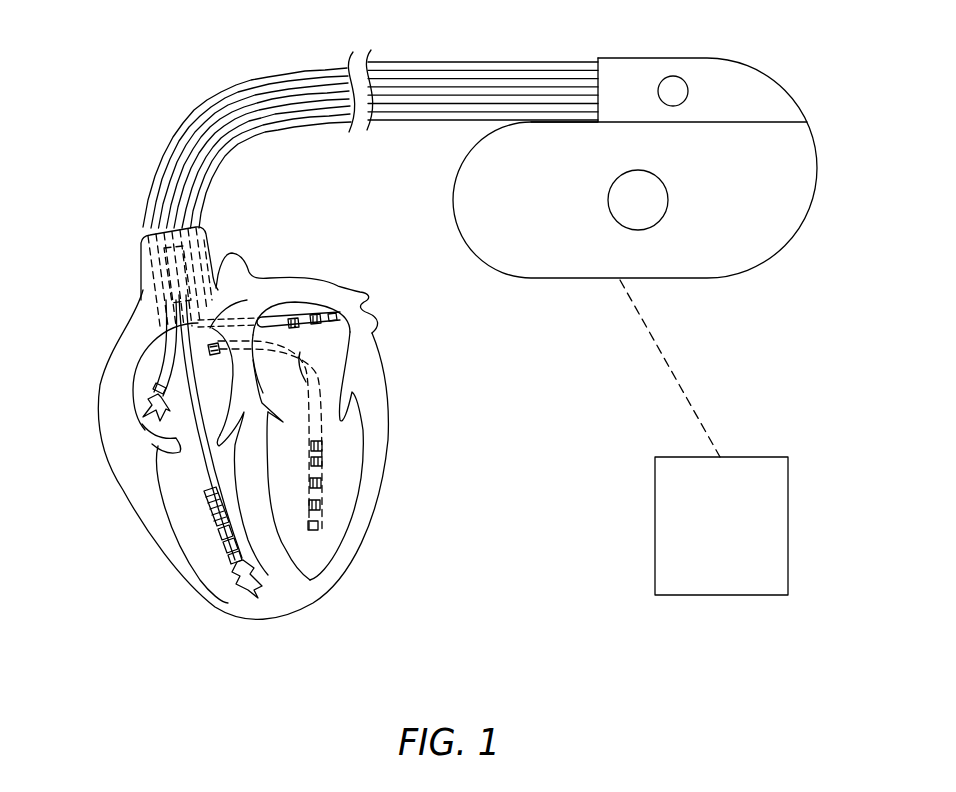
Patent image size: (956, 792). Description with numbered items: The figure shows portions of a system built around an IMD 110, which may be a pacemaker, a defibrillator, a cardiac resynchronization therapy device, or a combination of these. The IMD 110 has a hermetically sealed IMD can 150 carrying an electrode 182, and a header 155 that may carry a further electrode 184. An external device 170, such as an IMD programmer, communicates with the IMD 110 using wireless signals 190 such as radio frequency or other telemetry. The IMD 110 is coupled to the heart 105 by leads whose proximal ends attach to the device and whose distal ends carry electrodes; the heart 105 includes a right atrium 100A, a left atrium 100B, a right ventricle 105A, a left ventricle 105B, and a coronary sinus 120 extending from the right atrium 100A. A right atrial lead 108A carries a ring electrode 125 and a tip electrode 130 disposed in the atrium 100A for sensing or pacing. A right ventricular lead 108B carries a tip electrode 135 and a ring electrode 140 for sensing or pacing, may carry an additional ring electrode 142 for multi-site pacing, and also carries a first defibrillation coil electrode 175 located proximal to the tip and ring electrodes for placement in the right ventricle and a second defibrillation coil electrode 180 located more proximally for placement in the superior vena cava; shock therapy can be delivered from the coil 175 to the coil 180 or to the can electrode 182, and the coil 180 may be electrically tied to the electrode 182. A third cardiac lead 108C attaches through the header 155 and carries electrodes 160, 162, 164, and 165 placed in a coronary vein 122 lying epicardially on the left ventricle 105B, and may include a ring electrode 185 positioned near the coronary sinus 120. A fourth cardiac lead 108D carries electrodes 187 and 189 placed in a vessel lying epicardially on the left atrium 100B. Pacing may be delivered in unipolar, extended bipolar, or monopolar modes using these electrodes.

The right atrium 100A is at (152, 448).
The left atrium 100B is at (330, 352).
The heart 105 is at (375, 422).
The right ventricle 105A is at (178, 472).
The left ventricle 105B is at (320, 565).
The right atrial lead 108A is at (282, 76).
The right ventricular lead 108B is at (226, 104).
The third cardiac lead 108C is at (246, 128).
The fourth cardiac lead 108D is at (224, 162).
The IMD 110 is at (688, 50).
The coronary sinus 120 is at (213, 364).
The coronary vein 122 is at (300, 352).
The ring electrode 125 is at (150, 404).
The tip electrode 130 is at (140, 420).
The tip electrode 135 is at (246, 594).
The ring electrode 140 is at (238, 586).
The additional ring electrode 142 is at (232, 553).
The IMD can 150 is at (818, 174).
The header 155 is at (766, 74).
The electrode 160 is at (324, 487).
The electrode 162 is at (324, 447).
The electrode 164 is at (324, 463).
The electrode 165 is at (322, 509).
The external device 170 is at (722, 596).
The first defibrillation coil electrode 175 is at (207, 525).
The second defibrillation coil electrode 180 is at (168, 284).
The electrode 182 is at (670, 200).
The electrode 184 is at (690, 91).
The ring electrode 185 is at (218, 318).
The electrode 187 is at (291, 316).
The electrode 189 is at (316, 312).
The wireless signals 190 is at (672, 366).